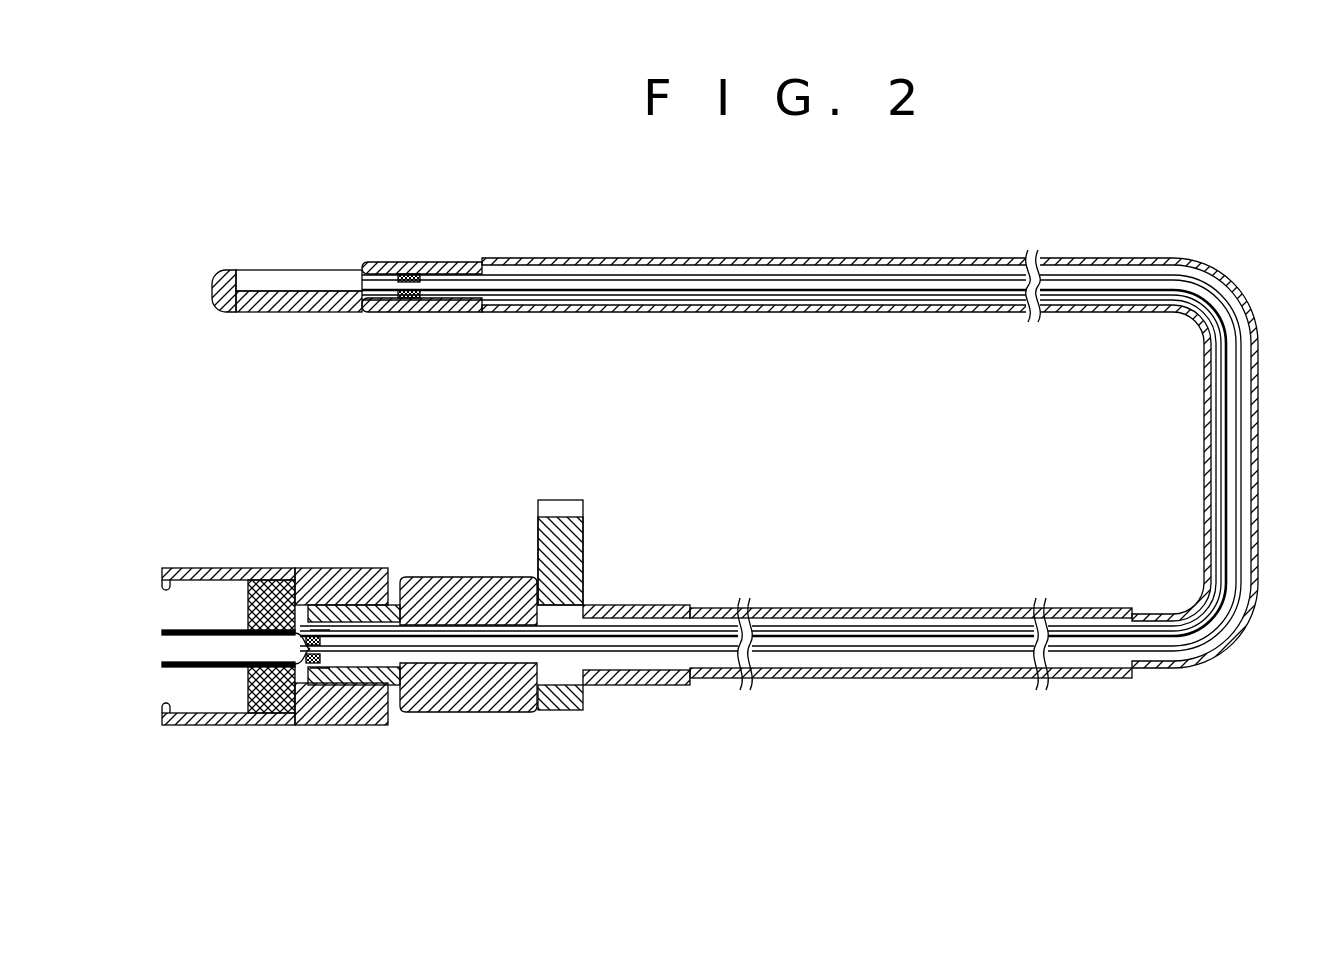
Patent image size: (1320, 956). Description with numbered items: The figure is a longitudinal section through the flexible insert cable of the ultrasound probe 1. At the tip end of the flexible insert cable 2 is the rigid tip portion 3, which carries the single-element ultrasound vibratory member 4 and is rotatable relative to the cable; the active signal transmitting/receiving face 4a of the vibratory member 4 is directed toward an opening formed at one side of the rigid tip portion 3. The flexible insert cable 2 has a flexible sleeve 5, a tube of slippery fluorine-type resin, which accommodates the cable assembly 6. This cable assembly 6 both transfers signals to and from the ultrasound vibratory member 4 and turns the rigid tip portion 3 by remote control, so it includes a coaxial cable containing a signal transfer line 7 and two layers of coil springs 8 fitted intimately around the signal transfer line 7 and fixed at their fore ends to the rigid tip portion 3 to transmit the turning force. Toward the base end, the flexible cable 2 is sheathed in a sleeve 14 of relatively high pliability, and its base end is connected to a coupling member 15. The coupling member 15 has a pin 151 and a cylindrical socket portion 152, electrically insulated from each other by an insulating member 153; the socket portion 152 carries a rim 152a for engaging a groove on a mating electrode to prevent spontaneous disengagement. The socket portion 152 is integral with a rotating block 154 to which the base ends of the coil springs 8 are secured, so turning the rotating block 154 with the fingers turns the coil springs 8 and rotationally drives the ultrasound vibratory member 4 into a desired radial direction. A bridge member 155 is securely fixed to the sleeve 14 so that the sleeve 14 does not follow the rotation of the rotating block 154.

The ultrasound probe 1 is at (1133, 234).
The flexible insert cable 2 is at (847, 257).
The rigid tip portion 3 is at (213, 290).
The ultrasound vibratory member 4 is at (283, 293).
The active signal transmitting/receiving face 4a is at (307, 268).
The flexible sleeve 5 is at (708, 257).
The cable assembly 6 is at (1246, 314).
The signal transfer line 7 is at (740, 292).
The coil springs 8 is at (557, 261).
The sleeve 14 is at (921, 680).
The coupling member 15 is at (392, 728).
The pin 151 is at (178, 632).
The cylindrical socket portion 152 is at (237, 568).
The rim 152a is at (163, 718).
The insulating member 153 is at (290, 714).
The rotating block 154 is at (498, 714).
The bridge member 155 is at (583, 551).